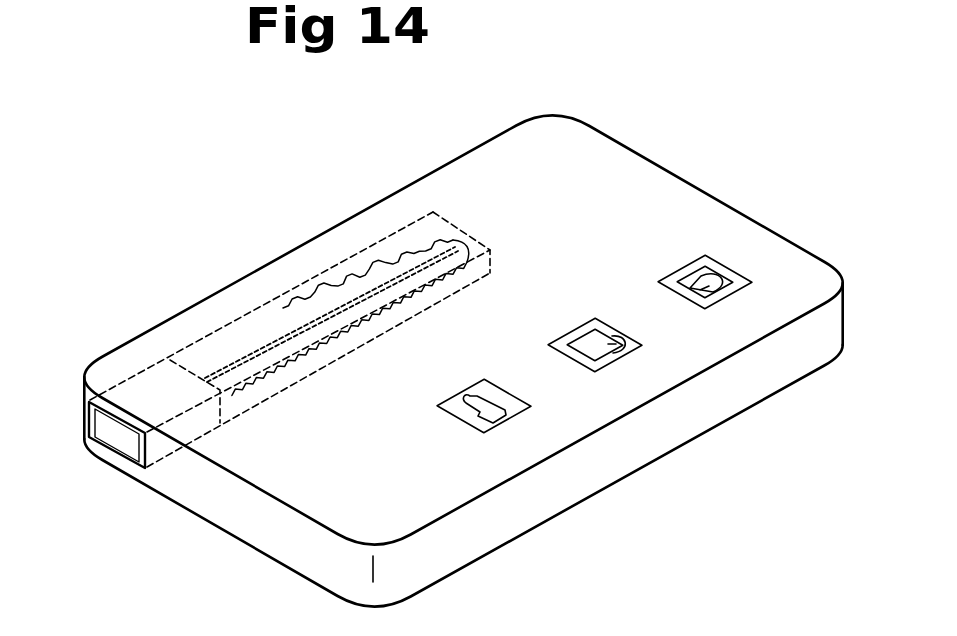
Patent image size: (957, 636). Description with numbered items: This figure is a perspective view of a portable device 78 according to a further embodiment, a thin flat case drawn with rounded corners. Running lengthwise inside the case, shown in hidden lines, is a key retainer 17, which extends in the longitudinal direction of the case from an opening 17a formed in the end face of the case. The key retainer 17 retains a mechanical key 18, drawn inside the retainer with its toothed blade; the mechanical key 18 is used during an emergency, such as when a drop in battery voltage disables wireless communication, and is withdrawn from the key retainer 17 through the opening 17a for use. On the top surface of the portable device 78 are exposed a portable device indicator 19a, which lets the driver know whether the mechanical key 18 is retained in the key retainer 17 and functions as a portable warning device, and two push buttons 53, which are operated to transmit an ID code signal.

The portable device 78 is at (694, 106).
The key retainer 17 is at (341, 262).
The opening 17a is at (127, 455).
The mechanical key 18 is at (240, 331).
The portable device indicator 19a is at (511, 393).
The push buttons 53 is at (683, 272).